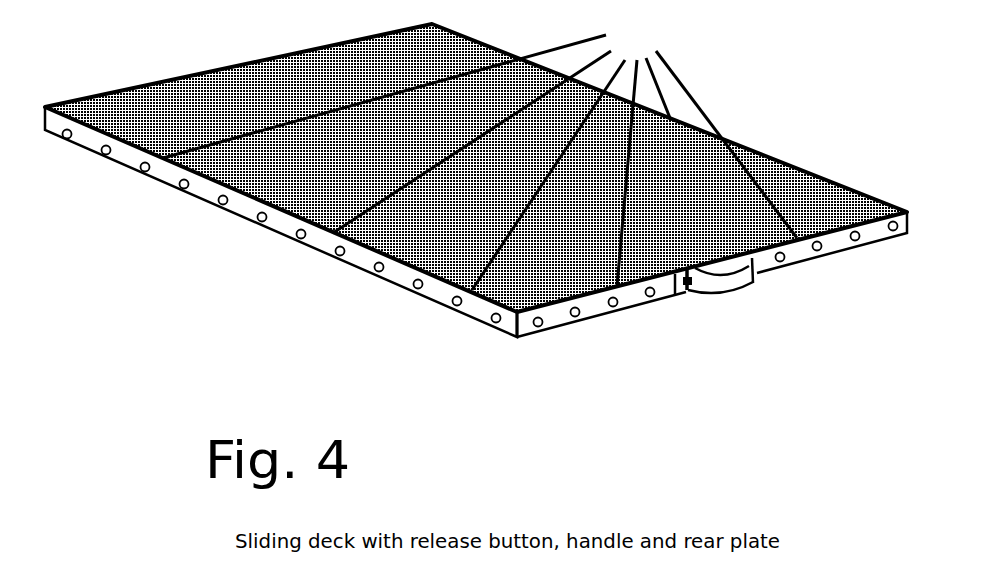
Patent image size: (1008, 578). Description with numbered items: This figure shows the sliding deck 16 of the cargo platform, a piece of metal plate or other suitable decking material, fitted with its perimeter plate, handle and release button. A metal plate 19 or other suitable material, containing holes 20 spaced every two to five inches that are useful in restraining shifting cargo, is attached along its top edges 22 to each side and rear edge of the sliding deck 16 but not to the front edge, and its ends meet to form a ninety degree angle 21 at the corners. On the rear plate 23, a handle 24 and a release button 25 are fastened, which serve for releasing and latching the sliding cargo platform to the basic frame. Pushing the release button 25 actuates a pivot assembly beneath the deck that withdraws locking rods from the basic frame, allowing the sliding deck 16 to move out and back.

The sliding deck 16 is at (807, 197).
The metal plate 19 is at (362, 262).
The holes 20 is at (258, 221).
The 90 degree angle 21 is at (517, 339).
The top edges 22 is at (480, 155).
The rear plate 23 is at (635, 303).
The handle 24 is at (751, 287).
The release button 25 is at (690, 284).